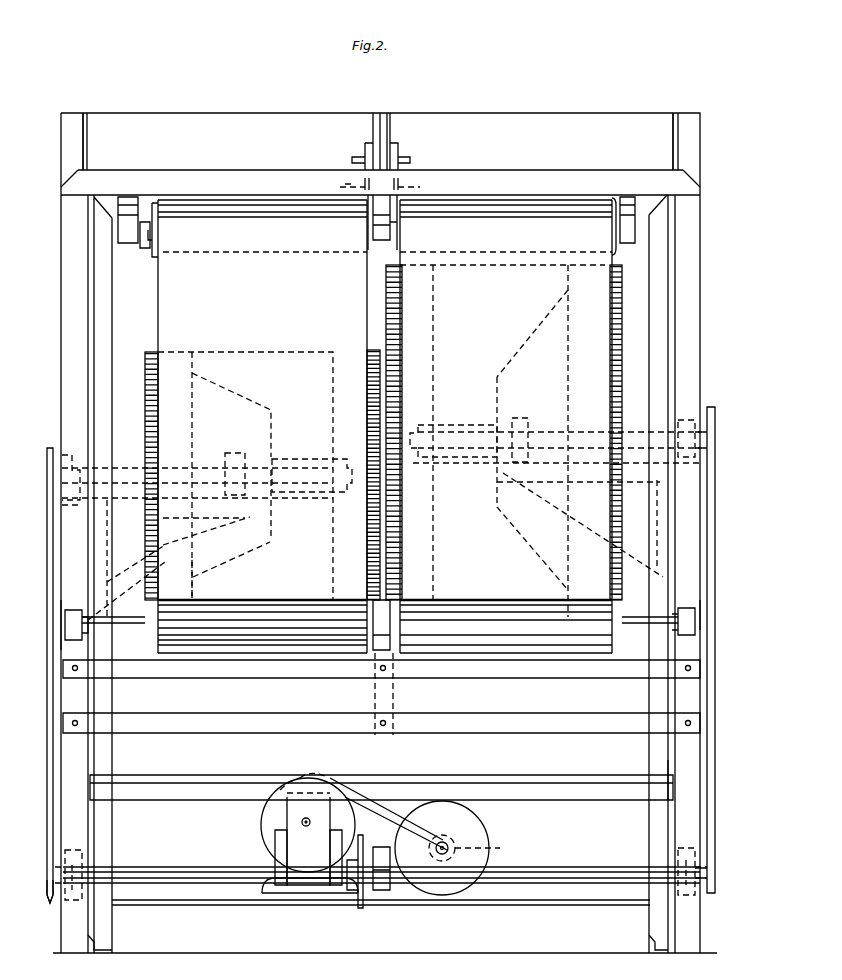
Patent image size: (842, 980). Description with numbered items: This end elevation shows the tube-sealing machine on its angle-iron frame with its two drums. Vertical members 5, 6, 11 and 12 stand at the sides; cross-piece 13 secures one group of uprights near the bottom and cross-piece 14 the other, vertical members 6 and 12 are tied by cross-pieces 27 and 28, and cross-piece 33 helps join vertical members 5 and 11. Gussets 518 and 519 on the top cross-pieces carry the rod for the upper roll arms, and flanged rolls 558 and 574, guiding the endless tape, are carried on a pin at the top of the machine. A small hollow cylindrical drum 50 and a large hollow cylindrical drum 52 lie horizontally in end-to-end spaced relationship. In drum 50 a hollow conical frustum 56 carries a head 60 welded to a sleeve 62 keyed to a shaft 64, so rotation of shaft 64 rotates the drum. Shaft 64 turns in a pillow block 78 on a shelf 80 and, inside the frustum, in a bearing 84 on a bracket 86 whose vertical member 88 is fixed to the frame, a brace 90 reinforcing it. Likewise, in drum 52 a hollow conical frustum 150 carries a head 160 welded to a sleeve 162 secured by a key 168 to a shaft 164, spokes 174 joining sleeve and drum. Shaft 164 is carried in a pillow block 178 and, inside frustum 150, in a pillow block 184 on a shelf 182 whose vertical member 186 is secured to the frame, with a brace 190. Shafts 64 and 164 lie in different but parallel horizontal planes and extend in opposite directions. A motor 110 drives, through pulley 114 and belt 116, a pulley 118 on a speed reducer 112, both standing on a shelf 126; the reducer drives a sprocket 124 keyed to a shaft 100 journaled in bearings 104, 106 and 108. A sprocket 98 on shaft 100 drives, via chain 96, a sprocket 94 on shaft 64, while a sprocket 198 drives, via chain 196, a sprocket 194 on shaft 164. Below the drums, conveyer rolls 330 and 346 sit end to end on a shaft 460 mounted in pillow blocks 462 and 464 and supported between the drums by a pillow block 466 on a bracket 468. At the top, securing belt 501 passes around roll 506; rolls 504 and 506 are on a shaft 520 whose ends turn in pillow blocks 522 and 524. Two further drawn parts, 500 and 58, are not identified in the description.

The vertical member 5 is at (70, 378).
The vertical member 6 is at (75, 766).
The vertical member 11 is at (690, 365).
The vertical member 12 is at (690, 786).
The cross-piece 13 is at (108, 950).
The cross-piece 14 is at (655, 950).
The gusset 518 is at (85, 118).
The gusset 519 is at (676, 118).
The flanged roll 558 is at (374, 118).
The flanged wheel 574 is at (388, 118).
The roll 506 is at (612, 198).
The left panel 500 is at (158, 290).
The securing belt 501 is at (606, 257).
The roll 504 is at (157, 255).
The shaft 520 is at (150, 240).
The pillow block 522 is at (120, 226).
The pillow block 524 is at (632, 228).
The small hollow cylindrical drum 50 is at (152, 352).
The large hollow cylindrical drum 52 is at (615, 337).
The sleeve 62 is at (298, 460).
The shaft 64 is at (208, 472).
The bearing 84 is at (237, 455).
The bracket 86 is at (262, 508).
The head 60 is at (270, 530).
The hollow conical frustum 56 is at (243, 553).
The guide 58 is at (194, 585).
The brace 90 is at (174, 562).
The vertical member 88 is at (104, 555).
The pillow block 78 is at (72, 455).
The shelf 80 is at (75, 500).
The sprocket 94 is at (50, 452).
The sprocket 98 is at (49, 902).
The spokes 174 is at (436, 358).
The key 168 is at (568, 285).
The hollow conical frustum 150 is at (522, 342).
The head 160 is at (497, 398).
The sleeve 162 is at (452, 425).
The pillow block 184 is at (520, 420).
The shaft 164 is at (582, 436).
The shelf 182 is at (497, 482).
The brace 190 is at (556, 512).
The pillow block 178 is at (692, 417).
The vertical member 186 is at (680, 520).
The sprocket 194 is at (715, 420).
The chain 196 is at (705, 614).
The sprocket 198 is at (705, 872).
The pillow block 462 is at (66, 612).
The chain 96 is at (61, 628).
The shaft 460 is at (130, 624).
The roll 330 is at (158, 641).
The pillow block 464 is at (690, 606).
The roll 346 is at (608, 636).
The pillow block 466 is at (380, 652).
The bracket 468 is at (396, 689).
The cross-piece 27 is at (230, 688).
The cross-piece 28 is at (312, 672).
The cross-piece 33 is at (200, 775).
The shaft 100 is at (160, 870).
The shelf 126 is at (505, 903).
The speed reducer 112 is at (288, 812).
The pulley 118 is at (272, 838).
The belt 116 is at (392, 795).
The motor 110 is at (470, 836).
The pulley 114 is at (480, 848).
The sprocket 124 is at (360, 908).
The bearing 106 is at (380, 847).
The bearing 104 is at (82, 850).
The bearing 108 is at (672, 848).